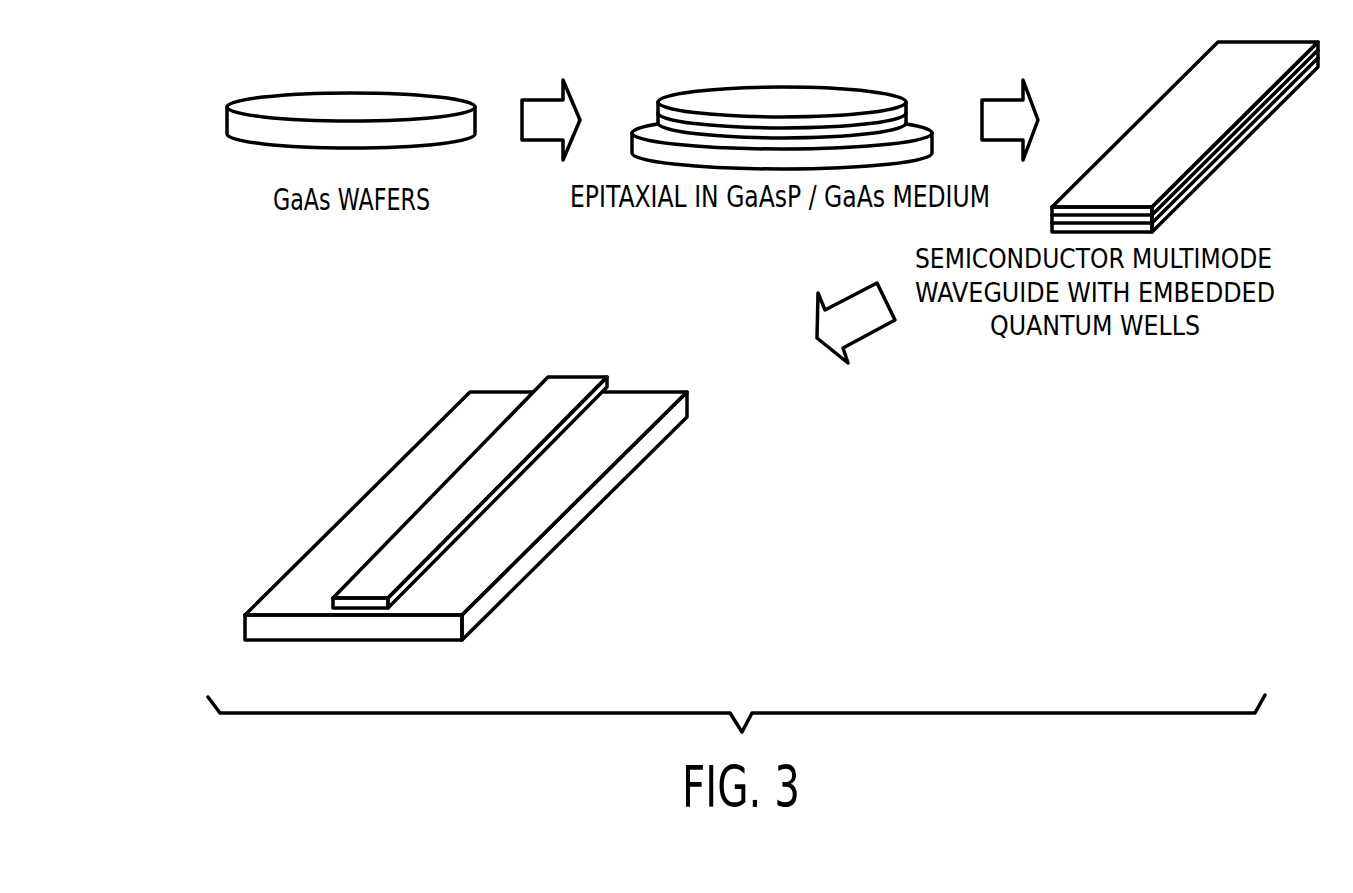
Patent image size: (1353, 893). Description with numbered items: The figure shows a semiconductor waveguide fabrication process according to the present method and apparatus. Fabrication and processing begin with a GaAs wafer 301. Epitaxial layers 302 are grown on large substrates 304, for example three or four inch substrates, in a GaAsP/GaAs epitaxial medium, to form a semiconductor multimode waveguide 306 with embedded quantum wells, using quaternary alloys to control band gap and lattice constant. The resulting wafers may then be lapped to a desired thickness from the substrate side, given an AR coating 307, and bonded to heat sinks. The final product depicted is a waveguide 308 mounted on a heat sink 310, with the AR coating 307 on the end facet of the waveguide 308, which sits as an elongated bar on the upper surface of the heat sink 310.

The GaAs wafer 301 is at (385, 93).
The epitaxial layers 302 is at (775, 87).
The substrate 304 is at (657, 161).
The semiconductor multimode waveguide 306 is at (1237, 143).
The AR coating 307 is at (236, 638).
The waveguide 308 is at (412, 536).
The heat sink 310 is at (320, 444).